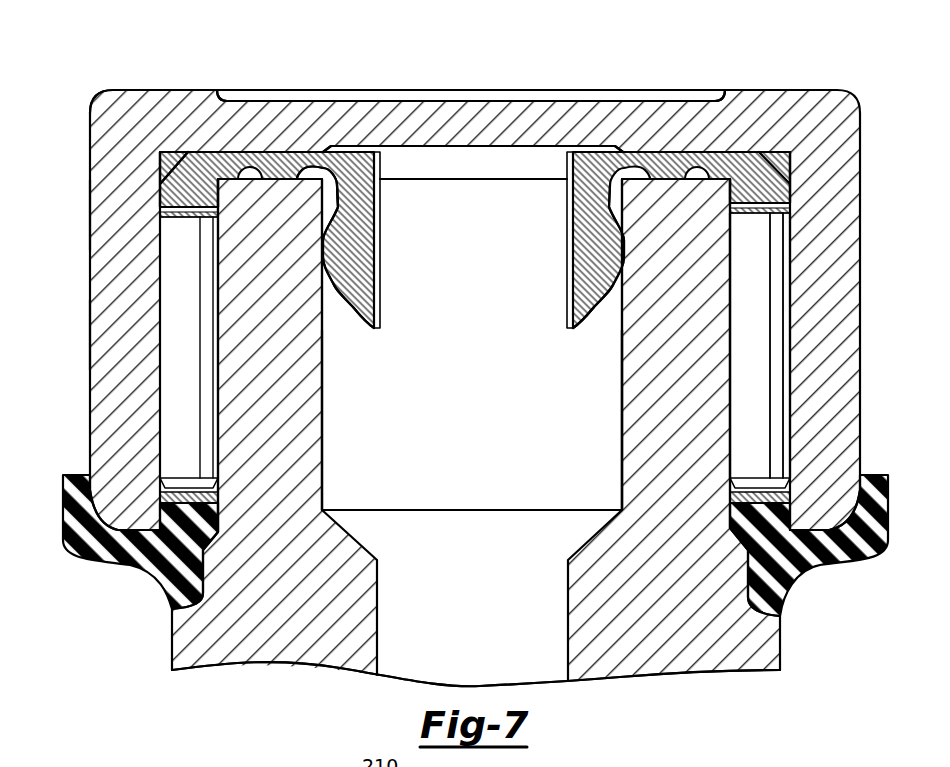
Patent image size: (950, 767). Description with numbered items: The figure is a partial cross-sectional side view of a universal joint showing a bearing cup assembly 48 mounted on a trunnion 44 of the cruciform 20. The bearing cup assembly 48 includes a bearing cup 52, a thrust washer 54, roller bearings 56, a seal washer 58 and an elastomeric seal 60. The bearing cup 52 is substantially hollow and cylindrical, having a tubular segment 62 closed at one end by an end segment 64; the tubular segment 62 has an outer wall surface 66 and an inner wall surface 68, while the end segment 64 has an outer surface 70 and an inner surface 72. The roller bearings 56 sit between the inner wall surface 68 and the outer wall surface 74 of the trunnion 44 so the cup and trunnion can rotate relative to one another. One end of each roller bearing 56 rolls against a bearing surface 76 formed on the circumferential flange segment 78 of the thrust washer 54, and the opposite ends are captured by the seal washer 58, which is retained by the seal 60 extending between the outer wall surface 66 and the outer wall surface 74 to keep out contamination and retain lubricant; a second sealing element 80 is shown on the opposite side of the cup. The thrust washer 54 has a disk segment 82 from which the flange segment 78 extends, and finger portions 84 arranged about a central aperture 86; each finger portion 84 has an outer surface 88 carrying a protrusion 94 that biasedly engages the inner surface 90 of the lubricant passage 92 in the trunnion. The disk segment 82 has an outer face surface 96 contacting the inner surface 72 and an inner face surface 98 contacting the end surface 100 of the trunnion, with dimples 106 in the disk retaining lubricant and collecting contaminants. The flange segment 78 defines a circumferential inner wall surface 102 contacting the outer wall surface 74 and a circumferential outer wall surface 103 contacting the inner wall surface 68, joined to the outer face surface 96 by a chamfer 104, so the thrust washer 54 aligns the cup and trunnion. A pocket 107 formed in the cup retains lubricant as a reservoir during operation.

The cruciform 20 is at (789, 698).
The trunnion 44 is at (640, 668).
The bearing cup assembly 48 is at (861, 87).
The bearing cup 52 is at (116, 86).
The thrust washer 54 is at (793, 203).
The roller bearings 56 is at (174, 267).
The seal washer 58 is at (796, 493).
The elastomeric seal 60 is at (894, 519).
The tubular segment 62 is at (95, 337).
The end segment 64 is at (754, 99).
The outer wall surface 66 is at (90, 216).
The inner wall surface 68 is at (785, 328).
The outer surface 70 is at (152, 88).
The inner surface 72 is at (643, 154).
The outer wall surface 74 is at (217, 378).
The bearing surface 76 is at (748, 212).
The circumferential flange segment 78 is at (159, 182).
The elastomeric flange 80 is at (150, 490).
The disk segment 82 is at (212, 151).
The finger portions 84 is at (350, 255).
The central aperture 86 is at (380, 170).
The outer surface 88 is at (596, 324).
The inner surface 90 is at (622, 392).
The lubricant passage 92 is at (490, 376).
The protrusion 94 is at (620, 257).
The outer face surface 96 is at (188, 151).
The inner face surface 98 is at (695, 170).
The end surface 100 is at (313, 170).
The circumferential inner wall surface 102 is at (221, 198).
The circumferential outer wall surface 103 is at (792, 189).
The chamfer 104 is at (797, 151).
The dimples 106 is at (250, 166).
The pocket 107 is at (521, 150).